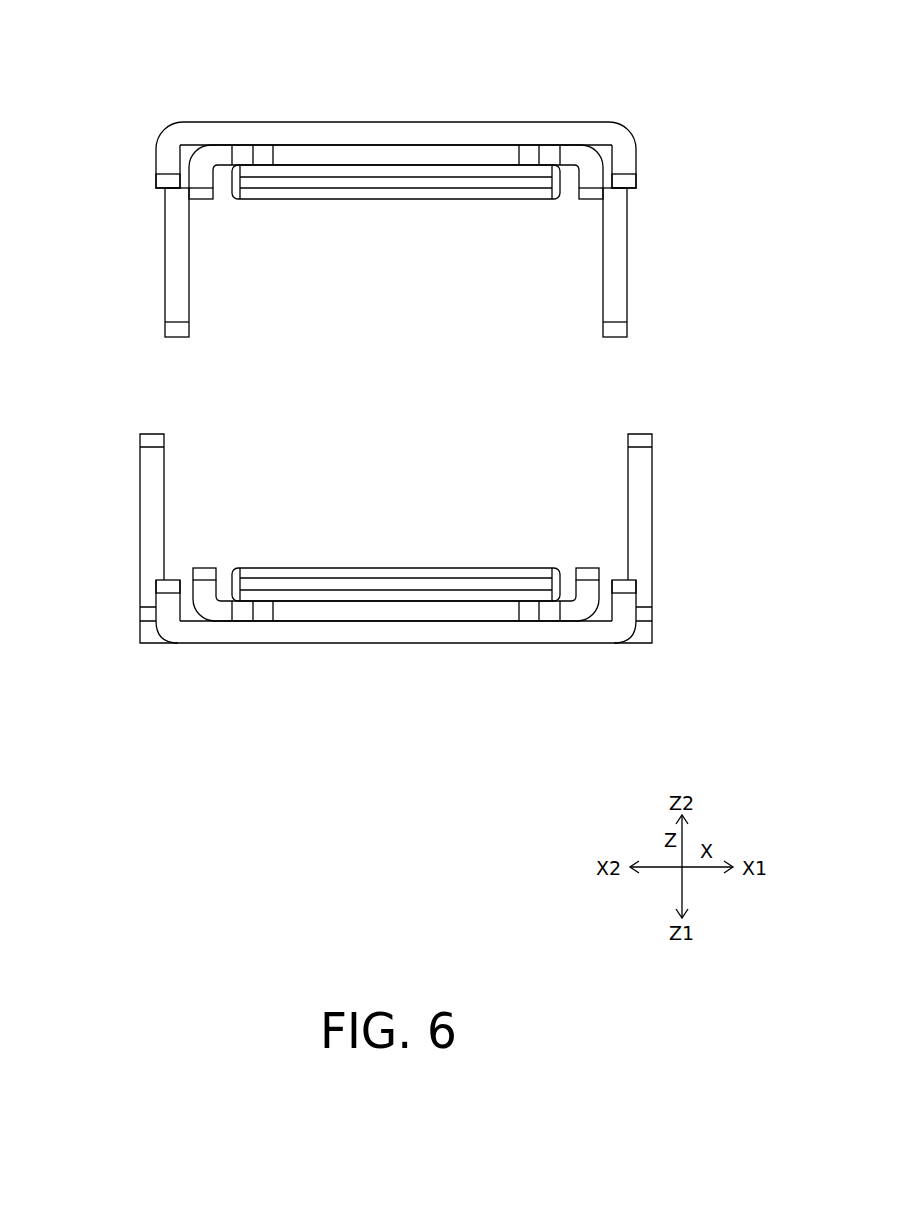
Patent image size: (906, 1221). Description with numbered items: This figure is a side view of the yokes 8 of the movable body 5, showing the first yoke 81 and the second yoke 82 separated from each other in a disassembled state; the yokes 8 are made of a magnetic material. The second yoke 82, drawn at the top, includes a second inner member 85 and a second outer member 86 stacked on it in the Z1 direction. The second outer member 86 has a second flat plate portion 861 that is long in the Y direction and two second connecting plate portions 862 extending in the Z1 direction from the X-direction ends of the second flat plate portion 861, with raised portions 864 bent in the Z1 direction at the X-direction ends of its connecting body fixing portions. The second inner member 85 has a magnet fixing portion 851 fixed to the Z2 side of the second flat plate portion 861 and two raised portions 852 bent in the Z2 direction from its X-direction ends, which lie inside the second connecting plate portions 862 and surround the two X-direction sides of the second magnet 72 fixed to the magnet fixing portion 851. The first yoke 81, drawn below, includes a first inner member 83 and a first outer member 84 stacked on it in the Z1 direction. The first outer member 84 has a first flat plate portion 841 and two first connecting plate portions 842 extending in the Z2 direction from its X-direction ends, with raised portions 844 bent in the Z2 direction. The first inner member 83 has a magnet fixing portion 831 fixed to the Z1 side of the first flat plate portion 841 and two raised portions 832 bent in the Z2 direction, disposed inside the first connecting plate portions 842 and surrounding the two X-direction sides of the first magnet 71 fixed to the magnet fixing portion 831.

The movable body 5 is at (127, 74).
The yokes 8 is at (394, 382).
The first yoke 81 is at (527, 720).
The second yoke 82 is at (527, 43).
The first inner member 83 is at (438, 630).
The first outer member 84 is at (487, 605).
The second inner member 85 is at (485, 147).
The second outer member 86 is at (438, 137).
The first magnet 71 is at (378, 568).
The second magnet 72 is at (378, 199).
The magnet fixing portion 831 is at (340, 612).
The raised portions 832 is at (207, 566).
The first flat plate portion 841 is at (533, 635).
The first connecting plate portions 842 is at (143, 488).
The raised portions 844 is at (163, 602).
The magnet fixing portion 851 is at (335, 157).
The raised portions 852 is at (203, 201).
The second flat plate portion 861 is at (535, 132).
The second connecting plate portions 862 is at (167, 275).
The raised portions 864 is at (160, 166).